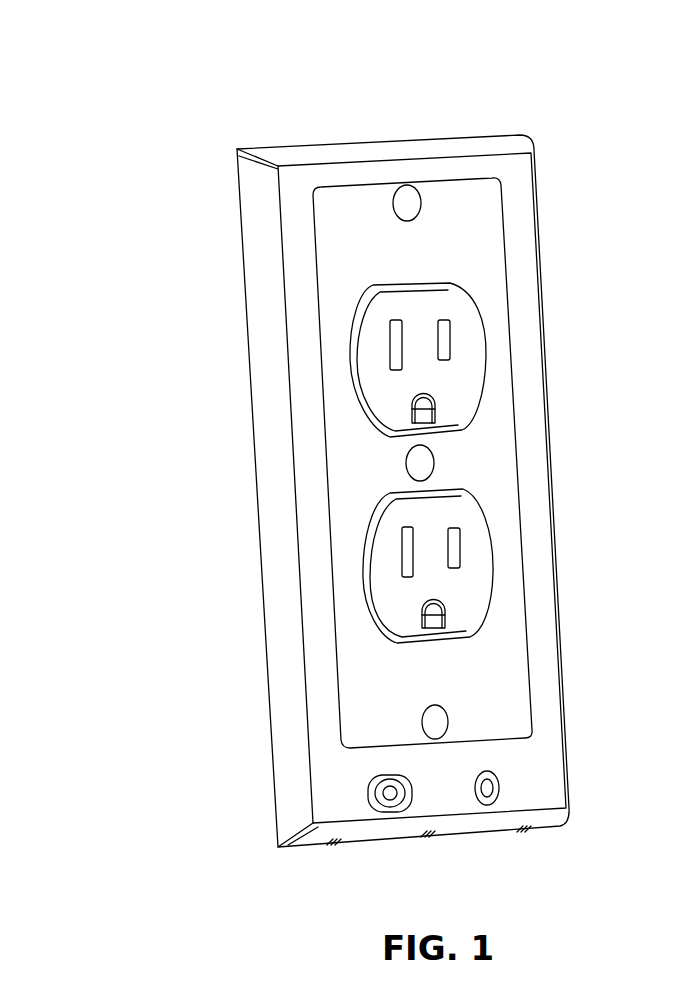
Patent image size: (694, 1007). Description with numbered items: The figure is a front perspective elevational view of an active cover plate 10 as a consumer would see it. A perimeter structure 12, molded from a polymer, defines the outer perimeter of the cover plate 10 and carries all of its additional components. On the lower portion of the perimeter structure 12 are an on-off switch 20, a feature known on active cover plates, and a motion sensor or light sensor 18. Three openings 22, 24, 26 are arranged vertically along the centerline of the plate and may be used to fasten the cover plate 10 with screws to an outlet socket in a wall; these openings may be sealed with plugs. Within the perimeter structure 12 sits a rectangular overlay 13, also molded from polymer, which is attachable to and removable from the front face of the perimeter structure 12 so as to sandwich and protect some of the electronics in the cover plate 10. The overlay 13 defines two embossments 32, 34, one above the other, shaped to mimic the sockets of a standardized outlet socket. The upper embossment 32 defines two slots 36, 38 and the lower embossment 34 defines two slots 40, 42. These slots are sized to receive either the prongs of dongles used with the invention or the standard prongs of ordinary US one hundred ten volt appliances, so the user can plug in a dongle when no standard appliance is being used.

The active cover plate 10 is at (547, 89).
The perimeter structure 12 is at (518, 210).
The rectangular overlay 13 is at (502, 678).
The motion sensor (or light sensor) 18 is at (497, 785).
The on-off switch 20 is at (377, 808).
The opening 22 is at (407, 203).
The opening 24 is at (434, 463).
The opening 26 is at (448, 720).
The embossment 32 is at (390, 407).
The embossment 34 is at (405, 618).
The slot 36 is at (393, 349).
The slot 38 is at (443, 337).
The slot 40 is at (407, 565).
The slot 42 is at (453, 542).